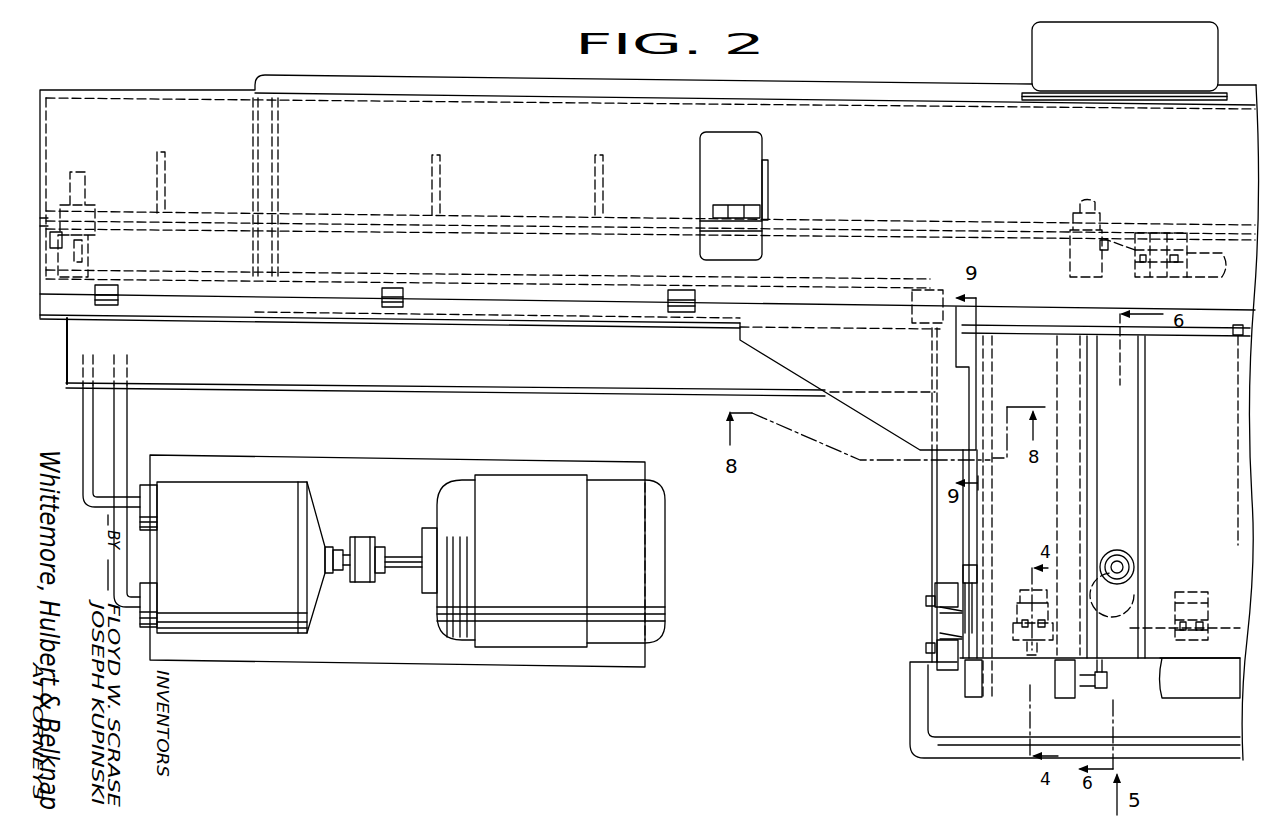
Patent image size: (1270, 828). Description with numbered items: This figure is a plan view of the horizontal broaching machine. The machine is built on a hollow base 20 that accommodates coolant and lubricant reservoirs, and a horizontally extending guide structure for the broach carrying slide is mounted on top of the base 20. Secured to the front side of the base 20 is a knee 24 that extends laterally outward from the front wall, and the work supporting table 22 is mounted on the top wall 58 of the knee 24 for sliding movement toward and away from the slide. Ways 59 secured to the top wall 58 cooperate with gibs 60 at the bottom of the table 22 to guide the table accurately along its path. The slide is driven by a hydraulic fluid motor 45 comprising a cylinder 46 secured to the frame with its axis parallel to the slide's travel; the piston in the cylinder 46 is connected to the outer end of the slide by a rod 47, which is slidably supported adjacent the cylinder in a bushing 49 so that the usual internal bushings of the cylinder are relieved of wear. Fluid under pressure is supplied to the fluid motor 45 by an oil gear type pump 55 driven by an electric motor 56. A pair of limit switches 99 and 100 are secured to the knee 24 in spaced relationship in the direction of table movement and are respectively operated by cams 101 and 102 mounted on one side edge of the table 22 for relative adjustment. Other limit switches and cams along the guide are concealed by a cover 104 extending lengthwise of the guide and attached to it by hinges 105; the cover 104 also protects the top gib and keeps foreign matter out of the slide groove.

The base 20 is at (850, 91).
The work supporting table 22 is at (1200, 505).
The knee 24 is at (1170, 724).
The fluid motor 45 is at (997, 267).
The cylinder 46 is at (518, 233).
The rod 47 is at (1200, 272).
The bushing 49 is at (1187, 262).
The oil gear type pump 55 is at (257, 553).
The electric motor 56 is at (547, 538).
The top wall of the knee 58 is at (1220, 727).
The ways 59 is at (1202, 666).
The gibs 60 is at (1240, 377).
The limit switch 99 is at (947, 593).
The limit switch 100 is at (947, 667).
The cam 101 is at (968, 565).
The cam 102 is at (1000, 672).
The cover 104 is at (672, 314).
The hinges 105 is at (395, 308).